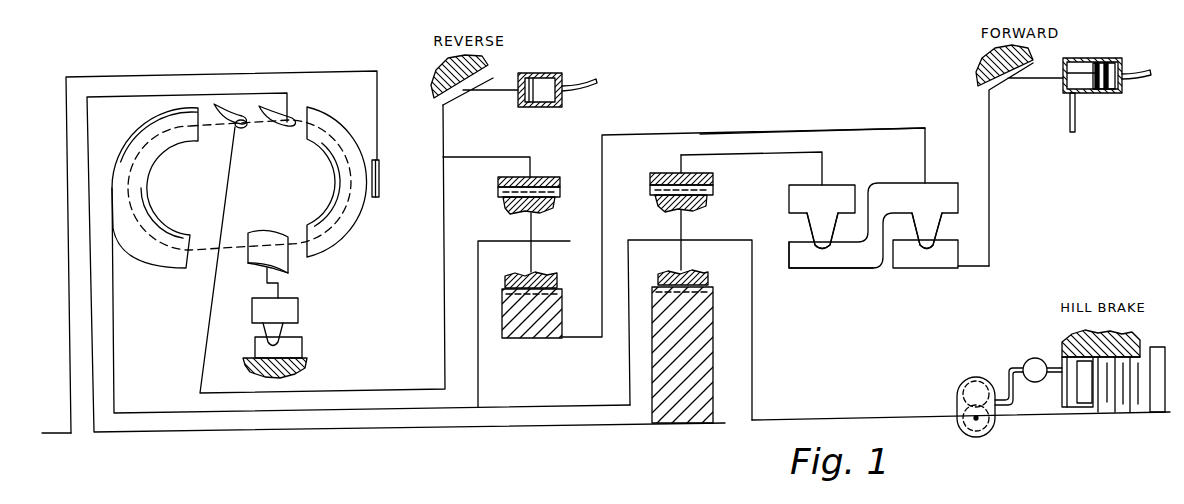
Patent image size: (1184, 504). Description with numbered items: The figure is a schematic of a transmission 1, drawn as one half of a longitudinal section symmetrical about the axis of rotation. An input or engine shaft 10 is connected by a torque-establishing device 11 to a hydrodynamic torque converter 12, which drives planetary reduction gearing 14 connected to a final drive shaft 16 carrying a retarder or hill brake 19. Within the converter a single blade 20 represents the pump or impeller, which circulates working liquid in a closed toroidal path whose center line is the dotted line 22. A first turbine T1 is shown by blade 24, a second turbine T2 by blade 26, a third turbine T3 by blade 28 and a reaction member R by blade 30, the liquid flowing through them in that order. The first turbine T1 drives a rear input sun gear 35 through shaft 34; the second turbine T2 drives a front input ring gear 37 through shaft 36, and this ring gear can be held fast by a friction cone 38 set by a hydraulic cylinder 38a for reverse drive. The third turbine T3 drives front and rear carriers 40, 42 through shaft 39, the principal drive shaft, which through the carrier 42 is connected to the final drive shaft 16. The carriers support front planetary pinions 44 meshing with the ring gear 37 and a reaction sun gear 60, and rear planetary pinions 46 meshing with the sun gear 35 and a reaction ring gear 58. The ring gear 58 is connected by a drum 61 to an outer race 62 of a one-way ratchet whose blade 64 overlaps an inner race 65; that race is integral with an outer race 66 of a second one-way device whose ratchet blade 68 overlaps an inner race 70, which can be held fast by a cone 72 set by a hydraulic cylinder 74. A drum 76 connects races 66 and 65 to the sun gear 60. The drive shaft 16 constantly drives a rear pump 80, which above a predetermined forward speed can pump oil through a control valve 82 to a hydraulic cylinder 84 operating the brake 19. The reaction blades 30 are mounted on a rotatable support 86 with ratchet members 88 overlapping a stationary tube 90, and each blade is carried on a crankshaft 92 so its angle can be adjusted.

The transmission 1 is at (346, 240).
The input or engine shaft 10 is at (45, 434).
The torque-establishing device 11 is at (379, 172).
The hydrodynamic torque converter 12 is at (231, 71).
The planetary reduction gearing 14 is at (638, 128).
The final drive shaft 16 is at (800, 419).
The retarder or hill brake 19 is at (1134, 341).
The blade 20 is at (338, 169).
The dotted line 22 is at (336, 128).
The blade 24 is at (289, 117).
The blade 26 is at (236, 126).
The blade 28 is at (134, 152).
The blade 30 is at (254, 270).
The shaft 34 is at (415, 428).
The rear input sun gear 35 is at (707, 362).
The shaft 36 is at (367, 391).
The front input ring gear 37 is at (538, 177).
The friction cone 38 is at (457, 94).
The hydraulic cylinder 38a is at (550, 75).
The shaft 39 is at (432, 408).
The front carrier 40 is at (480, 241).
The rear carrier 42 is at (648, 239).
The front planetary pinions 44 is at (508, 204).
The rear planetary pinions 46 is at (706, 207).
The reaction ring gear 58 is at (712, 178).
The reaction sun gear 60 is at (560, 312).
The drum 61 is at (779, 152).
The outer race 62 is at (832, 190).
The blade 64 is at (812, 230).
The inner race 65 is at (841, 256).
The outer race 66 is at (930, 188).
The ratchet blade 68 is at (932, 225).
The inner race 70 is at (932, 257).
The cone 72 is at (1003, 87).
The hydraulic cylinder 74 is at (1100, 94).
The drum 76 is at (791, 126).
The rear pump 80 is at (957, 398).
The control valve 82 is at (1040, 358).
The hydraulic cylinder 84 is at (1069, 398).
The rotatable support 86 is at (292, 310).
The ratchet members 88 is at (290, 330).
The stationary tube 90 is at (297, 353).
The crankshaft 92 is at (281, 292).
The first turbine T1 is at (276, 133).
The second turbine T2 is at (243, 133).
The third turbine T3 is at (166, 161).
The reaction member R is at (273, 227).